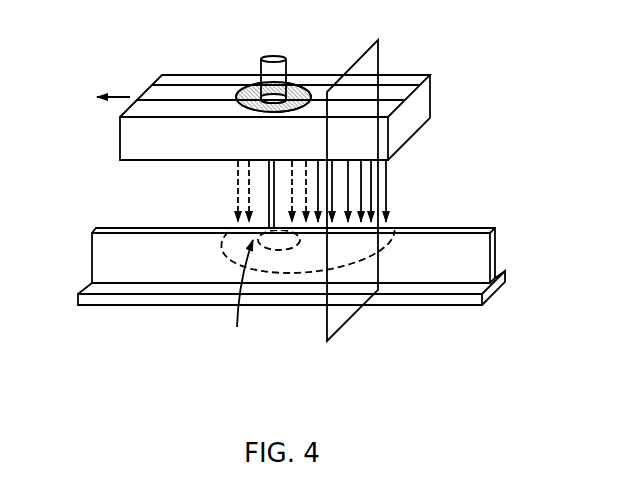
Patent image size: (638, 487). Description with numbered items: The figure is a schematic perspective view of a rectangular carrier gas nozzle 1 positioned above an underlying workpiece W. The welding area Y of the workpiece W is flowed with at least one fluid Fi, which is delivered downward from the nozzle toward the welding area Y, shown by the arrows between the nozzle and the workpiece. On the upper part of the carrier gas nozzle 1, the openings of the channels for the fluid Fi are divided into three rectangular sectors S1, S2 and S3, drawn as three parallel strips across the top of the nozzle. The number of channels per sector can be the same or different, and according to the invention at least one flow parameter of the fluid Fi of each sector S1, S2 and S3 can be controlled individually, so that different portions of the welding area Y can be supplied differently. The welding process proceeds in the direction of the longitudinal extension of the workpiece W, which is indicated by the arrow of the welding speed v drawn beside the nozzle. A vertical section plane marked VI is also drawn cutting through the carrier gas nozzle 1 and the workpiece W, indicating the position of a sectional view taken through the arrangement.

The carrier gas nozzle 1 is at (128, 77).
The welding speed v is at (101, 97).
The second rectangular sector S2 is at (165, 78).
The first rectangular sector S1 is at (180, 95).
The third rectangular sector S3 is at (212, 117).
The section plane VI- VI is at (350, 192).
The fluid Fi is at (365, 188).
The workpiece W is at (485, 247).
The welding area Y is at (240, 275).